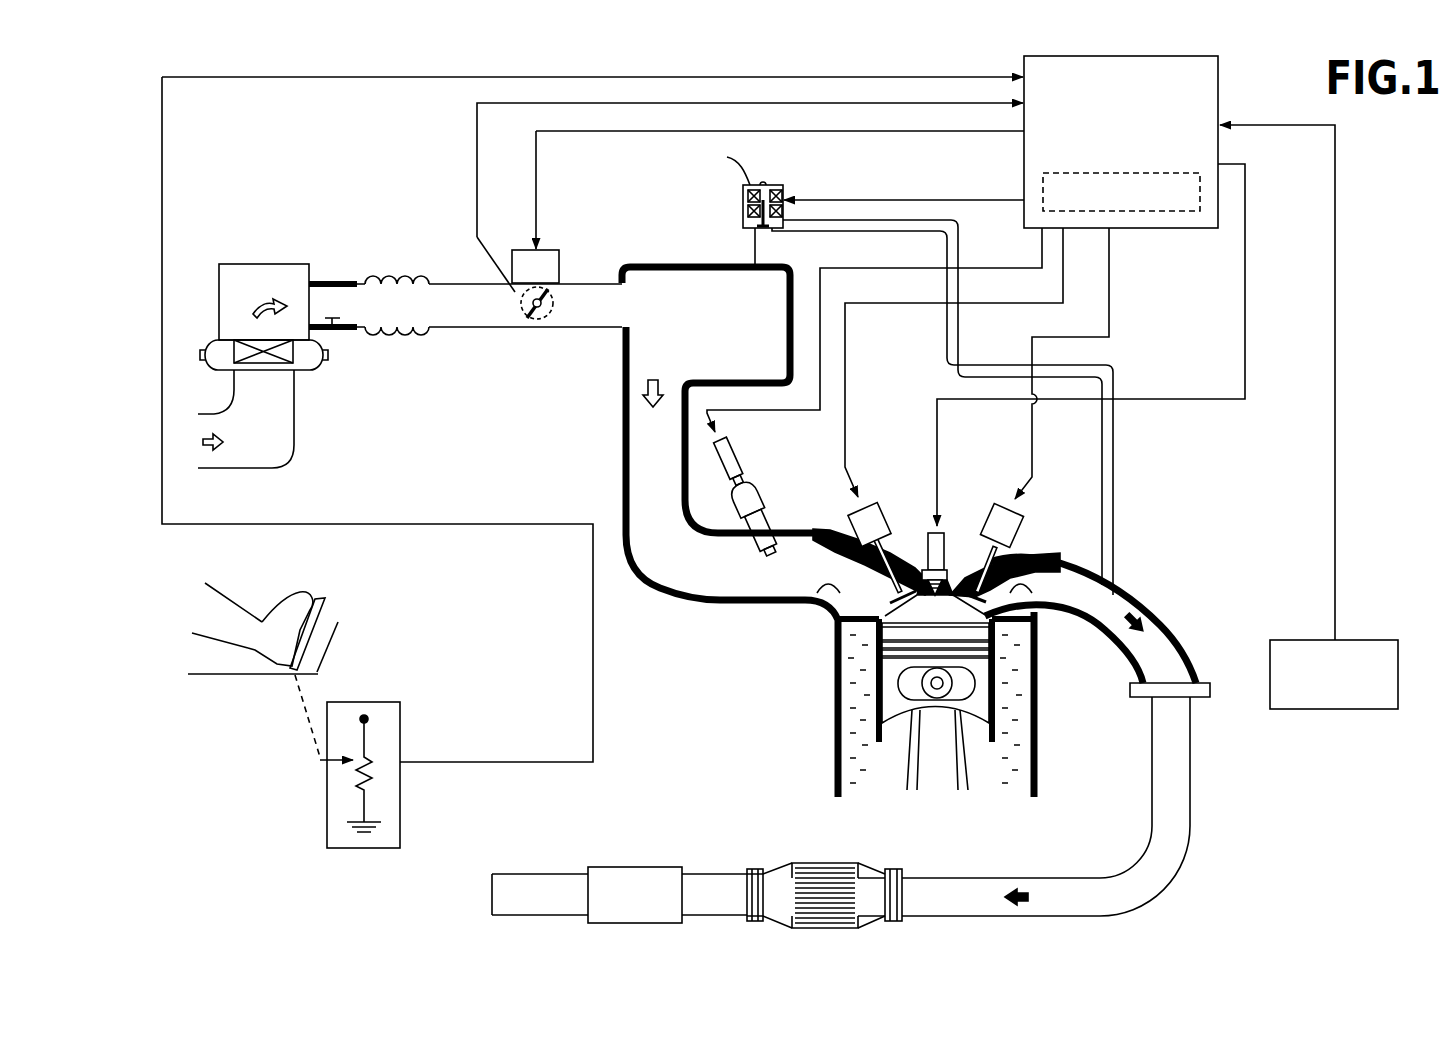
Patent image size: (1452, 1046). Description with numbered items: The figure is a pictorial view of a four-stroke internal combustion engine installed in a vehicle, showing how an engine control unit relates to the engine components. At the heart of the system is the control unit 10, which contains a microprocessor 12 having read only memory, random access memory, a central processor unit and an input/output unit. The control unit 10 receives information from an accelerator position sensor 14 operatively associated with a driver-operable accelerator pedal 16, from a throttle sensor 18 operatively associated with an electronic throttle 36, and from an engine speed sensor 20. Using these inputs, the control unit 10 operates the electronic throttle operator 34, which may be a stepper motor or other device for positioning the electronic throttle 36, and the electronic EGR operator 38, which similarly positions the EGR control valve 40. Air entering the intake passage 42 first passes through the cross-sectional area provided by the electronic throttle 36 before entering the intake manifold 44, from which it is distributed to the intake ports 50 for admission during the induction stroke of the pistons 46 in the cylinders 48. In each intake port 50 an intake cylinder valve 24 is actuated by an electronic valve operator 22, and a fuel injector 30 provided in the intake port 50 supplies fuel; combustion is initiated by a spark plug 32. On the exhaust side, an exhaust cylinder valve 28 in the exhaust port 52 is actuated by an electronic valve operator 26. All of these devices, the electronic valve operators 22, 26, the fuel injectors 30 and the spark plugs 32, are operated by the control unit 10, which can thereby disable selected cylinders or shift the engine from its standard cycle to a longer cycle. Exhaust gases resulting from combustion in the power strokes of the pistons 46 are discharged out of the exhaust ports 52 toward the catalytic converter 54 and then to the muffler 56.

The control unit 10 is at (1219, 100).
The microprocessor 12 is at (1135, 211).
The accelerator position sensor 14 is at (358, 702).
The accelerator pedal 16 is at (327, 610).
The throttle sensor 18 is at (546, 322).
The engine speed sensor 20 is at (1340, 709).
The electronic valve operators 22 is at (850, 517).
The intake cylinder valves 24 is at (907, 565).
The electronic valve operators 26 is at (1017, 532).
The exhaust cylinder valves 28 is at (990, 588).
The fuel injectors 30 is at (727, 507).
The spark plugs 32 is at (950, 527).
The electronic throttle operator 34 is at (518, 258).
The electronic throttle 36 is at (528, 312).
The electronic EGR operator 38 is at (785, 186).
The EGR control valve 40 is at (742, 228).
The intake passage 42 is at (467, 288).
The intake manifold 44 is at (651, 574).
The pistons 46 is at (893, 697).
The cylinders 48 is at (975, 697).
The intake ports 50 is at (813, 594).
The exhaust ports 52 is at (1042, 610).
The catalytic converter 54 is at (838, 862).
The muffler 56 is at (618, 866).